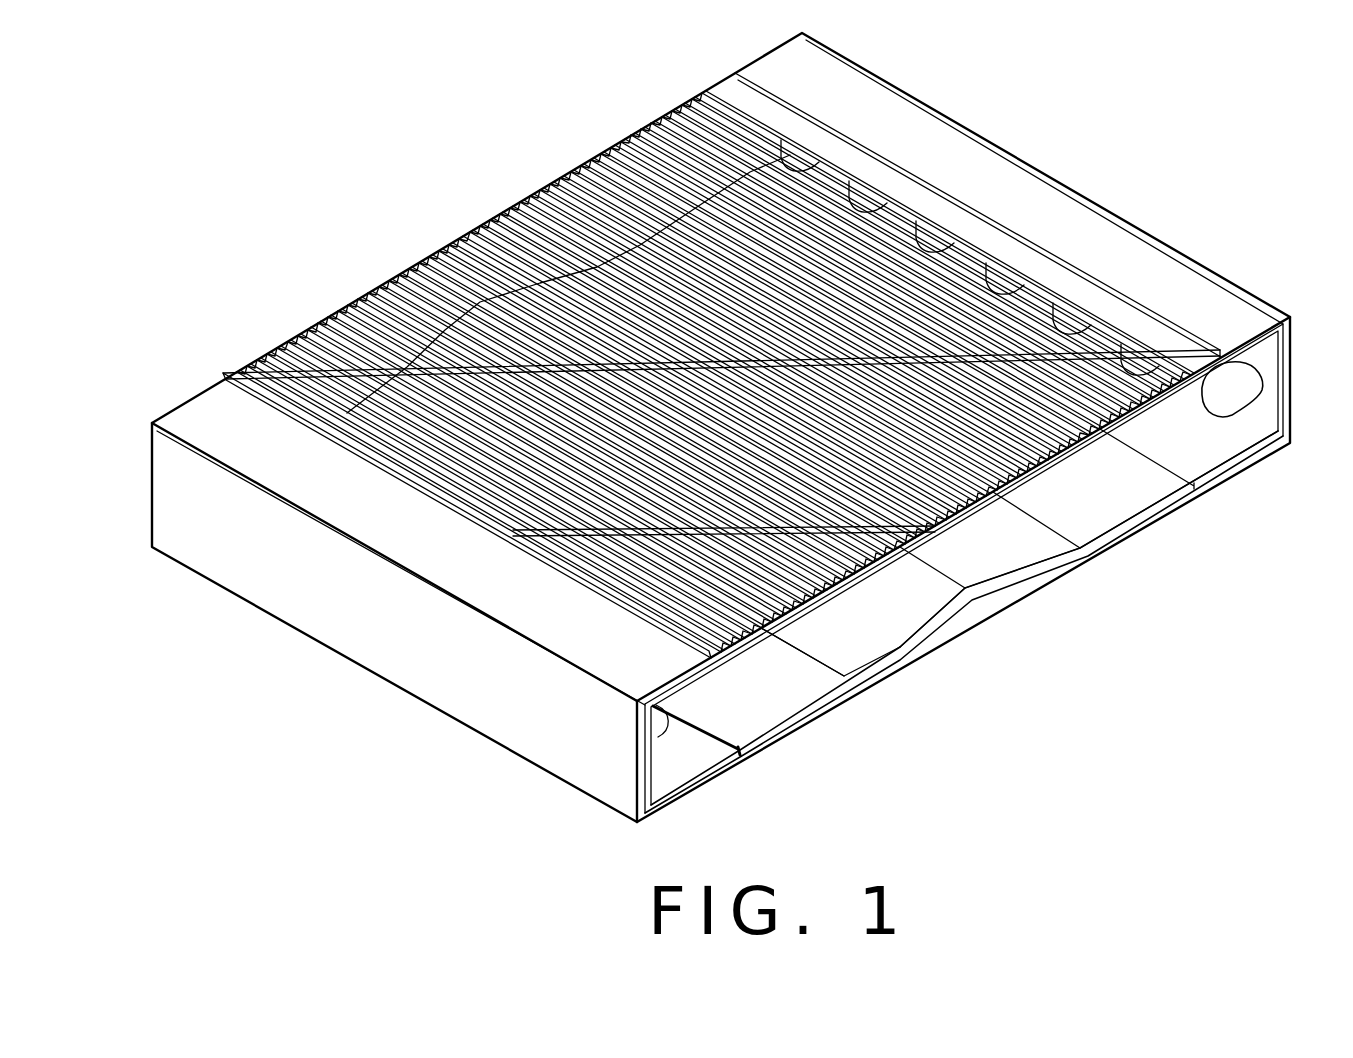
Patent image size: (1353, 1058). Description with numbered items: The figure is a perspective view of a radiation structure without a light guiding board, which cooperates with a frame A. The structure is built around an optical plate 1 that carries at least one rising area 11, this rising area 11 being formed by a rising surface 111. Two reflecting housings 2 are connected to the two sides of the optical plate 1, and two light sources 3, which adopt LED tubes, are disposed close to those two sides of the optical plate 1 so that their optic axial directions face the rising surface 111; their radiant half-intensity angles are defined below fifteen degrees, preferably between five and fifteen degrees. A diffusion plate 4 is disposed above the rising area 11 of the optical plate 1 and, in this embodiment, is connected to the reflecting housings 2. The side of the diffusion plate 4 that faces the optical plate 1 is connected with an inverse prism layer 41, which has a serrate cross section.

The optical plate 1 is at (783, 690).
The rising area 11 is at (920, 630).
The rising surface 111 is at (860, 623).
The reflecting housing 2 is at (227, 440).
The light source 3 is at (1227, 383).
The diffusion plate 4 is at (520, 205).
The inverse prism layer 41 is at (1058, 460).
The frame A is at (432, 697).